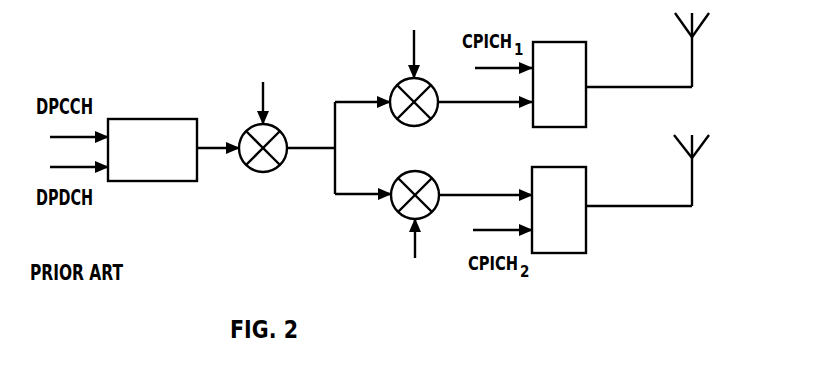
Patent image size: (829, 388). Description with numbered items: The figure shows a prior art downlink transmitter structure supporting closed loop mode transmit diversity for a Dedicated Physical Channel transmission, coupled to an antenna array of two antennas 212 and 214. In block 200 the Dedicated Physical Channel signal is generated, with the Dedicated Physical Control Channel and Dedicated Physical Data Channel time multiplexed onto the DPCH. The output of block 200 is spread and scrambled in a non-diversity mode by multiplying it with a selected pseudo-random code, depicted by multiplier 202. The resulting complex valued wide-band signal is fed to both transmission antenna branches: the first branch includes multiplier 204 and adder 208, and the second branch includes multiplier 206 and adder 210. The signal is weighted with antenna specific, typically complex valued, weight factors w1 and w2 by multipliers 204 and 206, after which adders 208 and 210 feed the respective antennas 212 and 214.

The block 200 is at (198, 175).
The multiplier 202 is at (287, 161).
The multiplier 204 is at (439, 115).
The multiplier 206 is at (392, 205).
The adder 208 is at (586, 100).
The adder 210 is at (586, 233).
The antenna 212 is at (708, 18).
The antenna 214 is at (707, 140).